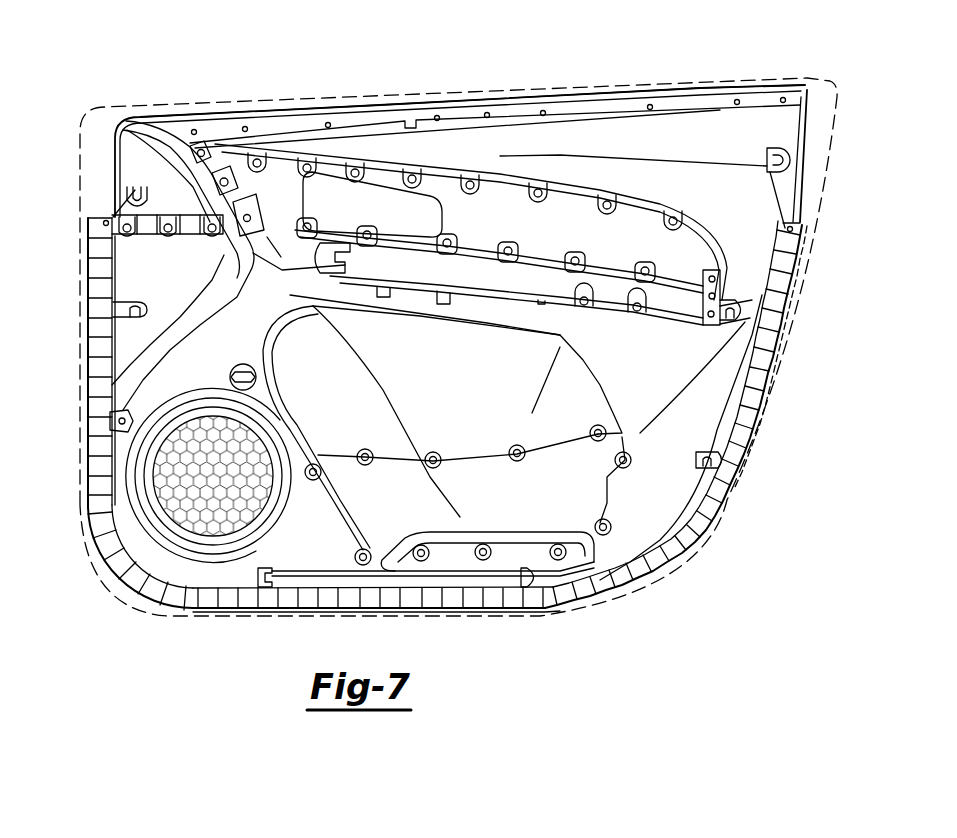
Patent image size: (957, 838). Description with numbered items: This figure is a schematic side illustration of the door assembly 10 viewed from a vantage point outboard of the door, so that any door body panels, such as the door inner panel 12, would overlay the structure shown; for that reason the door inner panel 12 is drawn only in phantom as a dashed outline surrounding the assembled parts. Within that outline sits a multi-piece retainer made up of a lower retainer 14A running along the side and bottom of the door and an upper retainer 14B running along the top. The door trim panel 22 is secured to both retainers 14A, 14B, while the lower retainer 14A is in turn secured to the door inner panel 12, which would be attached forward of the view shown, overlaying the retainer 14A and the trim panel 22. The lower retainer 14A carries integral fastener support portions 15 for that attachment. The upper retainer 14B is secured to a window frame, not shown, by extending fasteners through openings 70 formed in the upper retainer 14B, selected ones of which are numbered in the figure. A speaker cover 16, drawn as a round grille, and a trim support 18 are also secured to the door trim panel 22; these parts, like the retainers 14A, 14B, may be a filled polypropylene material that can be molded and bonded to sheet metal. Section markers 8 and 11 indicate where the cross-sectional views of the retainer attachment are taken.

The door assembly 10 is at (157, 56).
The door inner panel 12 is at (258, 100).
The lower retainer 14A is at (757, 380).
The upper retainer 14B is at (377, 122).
The fastener support portions 15 is at (118, 425).
The speaker cover 16 is at (230, 490).
The trim support 18 is at (557, 513).
The door trim panel 22 is at (722, 128).
The openings 70 is at (328, 122).
The section line 8- 8 is at (100, 320).
The section line 11- 11 is at (520, 128).